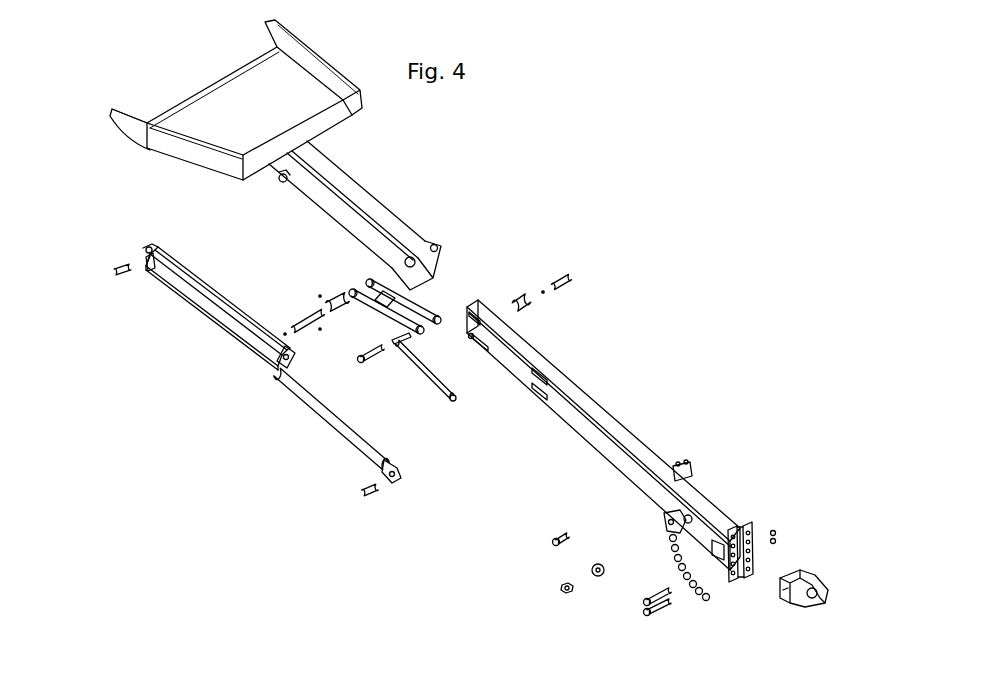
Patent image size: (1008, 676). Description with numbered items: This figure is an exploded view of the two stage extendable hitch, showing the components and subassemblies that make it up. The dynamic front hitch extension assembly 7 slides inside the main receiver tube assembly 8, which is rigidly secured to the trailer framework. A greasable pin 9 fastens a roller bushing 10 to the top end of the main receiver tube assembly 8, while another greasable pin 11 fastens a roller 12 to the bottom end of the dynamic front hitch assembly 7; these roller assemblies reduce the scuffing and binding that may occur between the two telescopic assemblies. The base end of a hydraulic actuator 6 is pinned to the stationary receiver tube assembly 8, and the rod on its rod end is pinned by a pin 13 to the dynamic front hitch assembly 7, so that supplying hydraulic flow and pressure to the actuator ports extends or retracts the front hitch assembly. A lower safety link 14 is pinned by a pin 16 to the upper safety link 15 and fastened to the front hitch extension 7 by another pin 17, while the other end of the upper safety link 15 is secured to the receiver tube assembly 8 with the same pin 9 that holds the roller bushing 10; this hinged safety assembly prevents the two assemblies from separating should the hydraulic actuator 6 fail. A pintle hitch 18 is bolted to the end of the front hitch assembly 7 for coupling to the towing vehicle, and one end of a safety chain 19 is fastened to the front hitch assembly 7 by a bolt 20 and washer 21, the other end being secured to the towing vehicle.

The hydraulic actuator 6 is at (205, 325).
The dynamic front hitch extension assembly 7 is at (623, 417).
The main receiver tube assembly 8 is at (375, 190).
The greasable pin 9 is at (298, 323).
The roller bushing 10 is at (340, 300).
The greasable pin 11 is at (567, 270).
The roller 12 is at (518, 293).
The pin 13 is at (117, 265).
The lower safety link 14 is at (452, 402).
The upper safety link 15 is at (383, 307).
The pin 16 is at (363, 367).
The pin 17 is at (566, 527).
The pintle hitch 18 is at (797, 575).
The safety chain 19 is at (698, 600).
The bolt 20 is at (562, 587).
The washer 21 is at (598, 580).